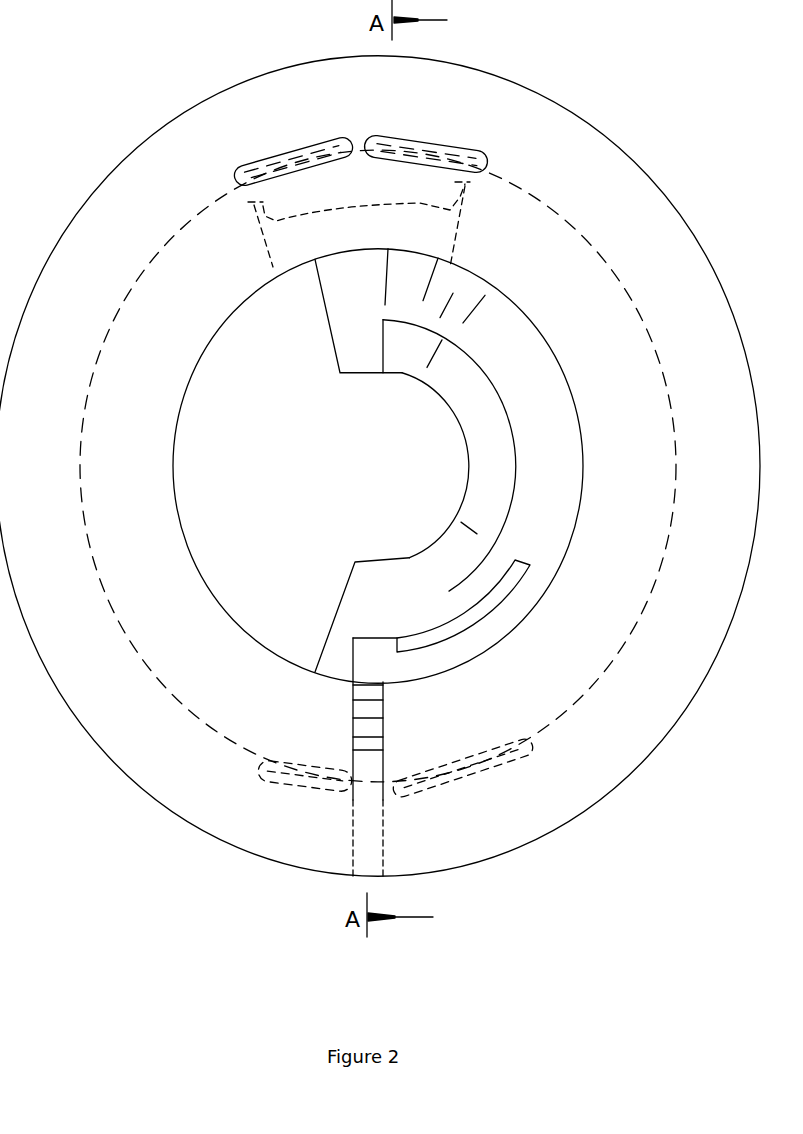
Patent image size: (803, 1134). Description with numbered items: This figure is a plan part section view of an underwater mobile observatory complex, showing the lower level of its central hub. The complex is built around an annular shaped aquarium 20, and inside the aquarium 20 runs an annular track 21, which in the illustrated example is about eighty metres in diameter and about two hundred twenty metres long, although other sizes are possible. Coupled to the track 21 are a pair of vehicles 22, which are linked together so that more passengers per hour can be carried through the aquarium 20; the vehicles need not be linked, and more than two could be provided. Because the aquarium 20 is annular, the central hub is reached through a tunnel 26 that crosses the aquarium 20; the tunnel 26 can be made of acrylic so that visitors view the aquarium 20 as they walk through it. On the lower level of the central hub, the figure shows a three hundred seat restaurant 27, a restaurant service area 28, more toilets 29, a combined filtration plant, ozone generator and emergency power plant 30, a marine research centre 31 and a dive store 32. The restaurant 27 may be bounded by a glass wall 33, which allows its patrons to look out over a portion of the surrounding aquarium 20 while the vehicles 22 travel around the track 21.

The aquarium 20 is at (51, 405).
The annular track 21 is at (110, 328).
The vehicles 22 is at (278, 155).
The tunnel 26 is at (330, 831).
The restaurant 27 is at (470, 455).
The restaurant service area 28 is at (451, 465).
The toilets 29 is at (412, 346).
The filtration plant, ozone generator and emergency power plant 30 is at (422, 615).
The marine research centre 31 is at (358, 311).
The dive store 32 is at (438, 290).
The glass wall 33 is at (553, 353).